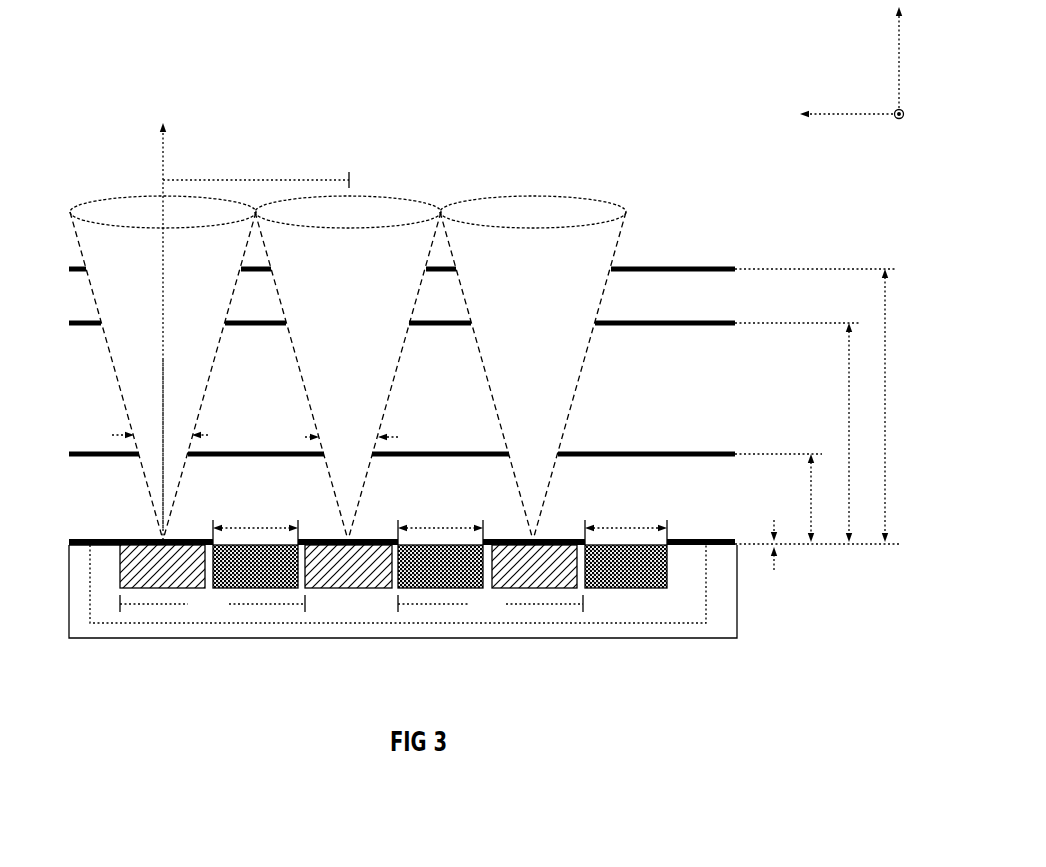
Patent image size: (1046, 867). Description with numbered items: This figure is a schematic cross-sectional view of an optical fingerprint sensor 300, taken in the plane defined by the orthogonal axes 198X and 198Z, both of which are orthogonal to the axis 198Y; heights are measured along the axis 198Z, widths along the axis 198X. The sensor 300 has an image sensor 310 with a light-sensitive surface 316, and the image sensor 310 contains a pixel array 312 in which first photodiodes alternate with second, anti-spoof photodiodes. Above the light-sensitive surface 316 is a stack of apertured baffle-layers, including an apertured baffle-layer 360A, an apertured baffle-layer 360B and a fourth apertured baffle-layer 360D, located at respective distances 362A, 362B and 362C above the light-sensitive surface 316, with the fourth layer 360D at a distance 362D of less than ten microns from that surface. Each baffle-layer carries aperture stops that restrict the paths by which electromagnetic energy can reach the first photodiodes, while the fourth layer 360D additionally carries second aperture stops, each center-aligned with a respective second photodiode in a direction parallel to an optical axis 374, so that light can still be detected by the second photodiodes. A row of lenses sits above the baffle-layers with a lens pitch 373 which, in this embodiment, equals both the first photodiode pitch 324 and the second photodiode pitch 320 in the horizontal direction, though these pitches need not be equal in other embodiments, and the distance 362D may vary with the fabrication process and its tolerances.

The optical fingerprint sensor 300 is at (120, 66).
The image sensor 310 is at (725, 625).
The pixel array 312 is at (690, 610).
The light-sensitive surface 316 is at (98, 533).
The second photodiode pitch 320 is at (490, 605).
The first photodiode pitch 324 is at (212, 605).
The apertured baffle-layer 360A is at (672, 268).
The apertured baffle-layer 360B is at (700, 326).
The fourth apertured baffle-layer 360D is at (690, 540).
The distance 362A is at (885, 405).
The distance 362B is at (848, 432).
The distance 362C is at (810, 498).
The distance 362D is at (776, 560).
The lens pitch 373 is at (256, 172).
The optical axis 374 is at (163, 174).
The axis 198X is at (846, 115).
The axis 198Y is at (895, 110).
The axis 198Z is at (900, 57).